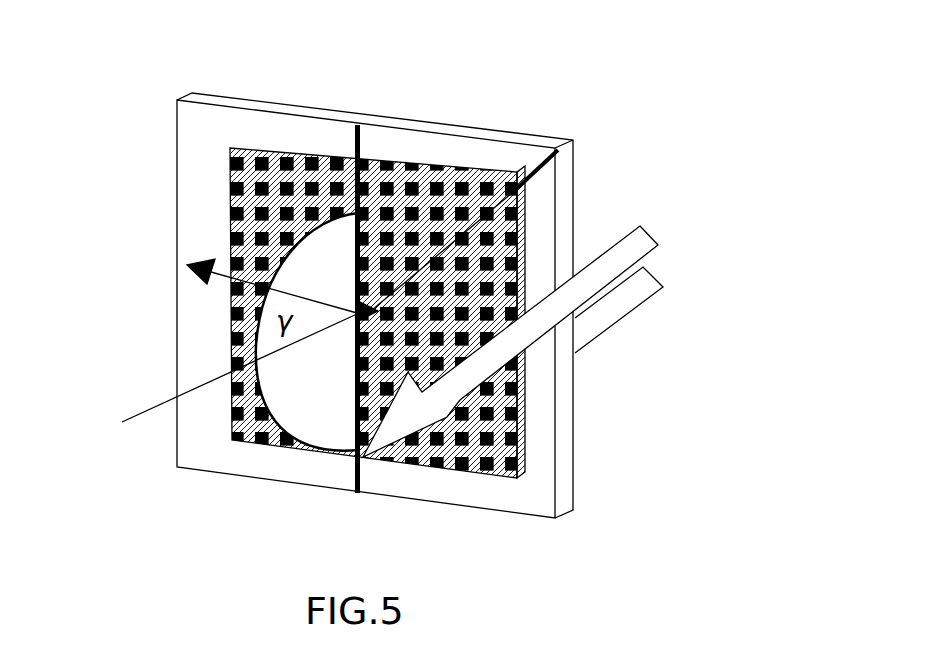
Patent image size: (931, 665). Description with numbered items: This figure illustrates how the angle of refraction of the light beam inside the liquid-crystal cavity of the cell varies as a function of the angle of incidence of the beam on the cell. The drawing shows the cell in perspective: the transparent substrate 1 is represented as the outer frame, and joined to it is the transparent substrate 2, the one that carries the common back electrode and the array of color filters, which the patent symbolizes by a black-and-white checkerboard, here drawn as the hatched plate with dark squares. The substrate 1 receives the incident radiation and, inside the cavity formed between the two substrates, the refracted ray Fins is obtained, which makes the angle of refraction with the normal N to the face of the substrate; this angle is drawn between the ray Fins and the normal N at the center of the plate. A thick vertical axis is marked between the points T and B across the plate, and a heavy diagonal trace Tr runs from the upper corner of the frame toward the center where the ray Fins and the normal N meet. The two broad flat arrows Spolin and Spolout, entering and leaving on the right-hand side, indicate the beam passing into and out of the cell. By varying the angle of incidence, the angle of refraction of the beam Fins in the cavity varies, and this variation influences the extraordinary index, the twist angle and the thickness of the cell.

The transparent substrate 1 is at (560, 206).
The transparent substrate 2 is at (236, 150).
The top point of axis T is at (357, 194).
The bottom point of axis B is at (357, 421).
The trajectory Tr is at (518, 167).
The normal N is at (235, 373).
The ray in the liquid-crystal cavity Fins is at (187, 265).
The incoming spool / strand Spolin is at (640, 290).
The outgoing spool / strand Spolout is at (535, 330).